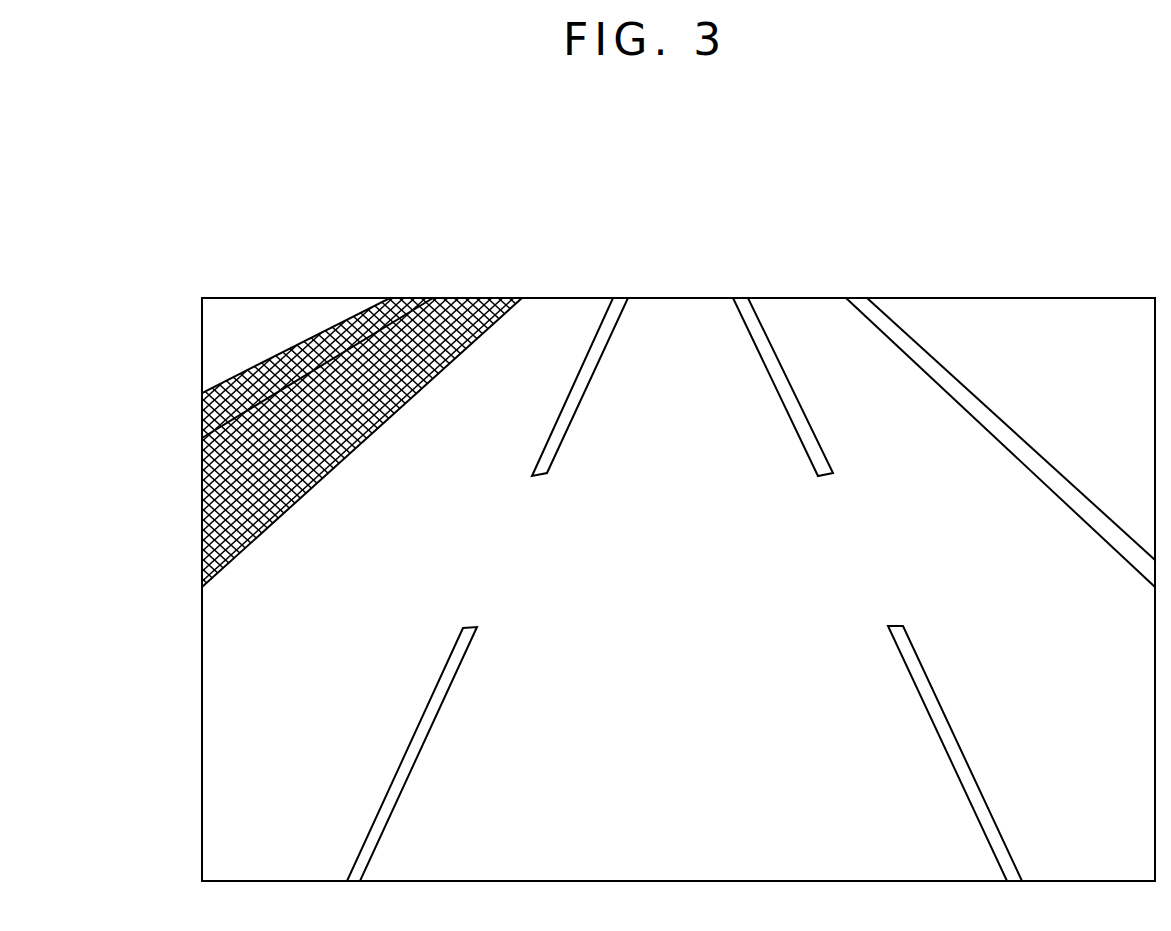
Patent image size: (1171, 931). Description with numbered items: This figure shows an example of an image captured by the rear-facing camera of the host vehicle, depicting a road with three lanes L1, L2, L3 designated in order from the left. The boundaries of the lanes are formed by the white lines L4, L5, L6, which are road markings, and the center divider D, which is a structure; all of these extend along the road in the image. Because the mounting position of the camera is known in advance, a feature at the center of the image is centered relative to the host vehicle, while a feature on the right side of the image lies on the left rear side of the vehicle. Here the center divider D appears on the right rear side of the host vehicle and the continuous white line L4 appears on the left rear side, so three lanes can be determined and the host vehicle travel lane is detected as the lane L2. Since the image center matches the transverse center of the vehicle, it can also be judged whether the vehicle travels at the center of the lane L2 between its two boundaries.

The center divider D is at (408, 298).
The lane L1 is at (840, 298).
The lane L2 is at (738, 298).
The lane L3 is at (612, 298).
The white line L4 is at (857, 298).
The white line L5 is at (743, 298).
The white line L6 is at (617, 298).